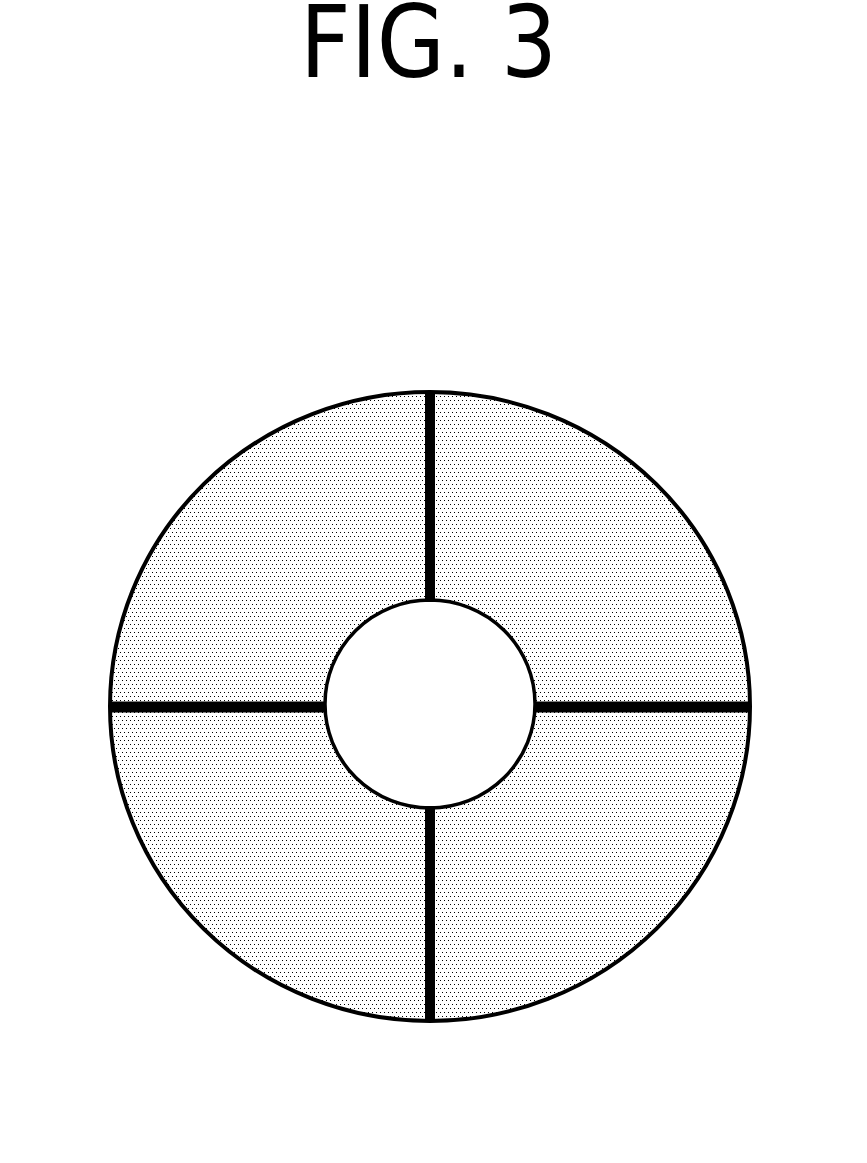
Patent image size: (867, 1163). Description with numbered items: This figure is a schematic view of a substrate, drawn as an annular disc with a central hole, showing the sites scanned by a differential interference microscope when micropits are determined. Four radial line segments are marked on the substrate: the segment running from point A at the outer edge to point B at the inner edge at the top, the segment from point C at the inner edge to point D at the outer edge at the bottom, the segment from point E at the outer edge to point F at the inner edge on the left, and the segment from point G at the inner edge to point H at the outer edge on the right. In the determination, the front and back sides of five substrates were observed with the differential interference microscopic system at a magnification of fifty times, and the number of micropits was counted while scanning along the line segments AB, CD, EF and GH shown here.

The scan line endpoint A is at (460, 422).
The scan line endpoint B is at (462, 552).
The scan line endpoint C is at (462, 853).
The scan line endpoint D is at (465, 1005).
The scan line endpoint E is at (125, 687).
The scan line endpoint F is at (272, 687).
The scan line endpoint G is at (588, 681).
The scan line endpoint H is at (728, 681).